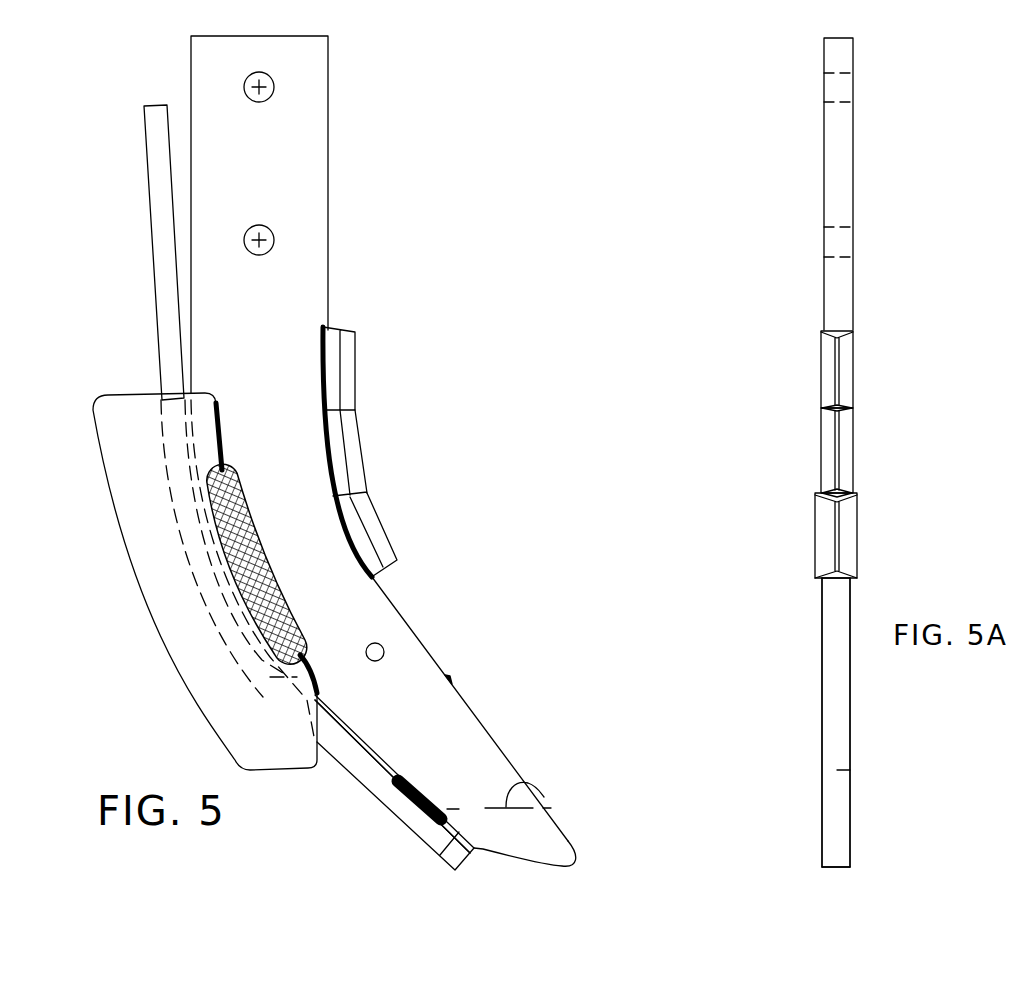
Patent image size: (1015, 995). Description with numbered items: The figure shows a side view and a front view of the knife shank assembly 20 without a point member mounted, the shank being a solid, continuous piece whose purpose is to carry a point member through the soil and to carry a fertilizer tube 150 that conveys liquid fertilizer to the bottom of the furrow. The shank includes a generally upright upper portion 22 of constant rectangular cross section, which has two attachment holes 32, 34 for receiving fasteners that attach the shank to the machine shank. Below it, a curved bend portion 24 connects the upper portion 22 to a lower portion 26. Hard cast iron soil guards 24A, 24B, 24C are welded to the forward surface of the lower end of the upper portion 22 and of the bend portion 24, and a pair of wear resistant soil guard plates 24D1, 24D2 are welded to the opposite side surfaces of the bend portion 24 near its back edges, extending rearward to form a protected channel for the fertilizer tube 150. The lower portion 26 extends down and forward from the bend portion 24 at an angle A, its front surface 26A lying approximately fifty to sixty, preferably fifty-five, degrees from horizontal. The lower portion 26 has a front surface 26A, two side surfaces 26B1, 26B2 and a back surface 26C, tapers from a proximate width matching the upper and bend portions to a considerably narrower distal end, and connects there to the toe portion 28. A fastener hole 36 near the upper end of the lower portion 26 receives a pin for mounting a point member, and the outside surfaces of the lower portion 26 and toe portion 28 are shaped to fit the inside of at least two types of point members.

In FIG. 5, the knife shank assembly 20 is at (338, 252).
In FIG. 5A, the knife shank assembly 20 is at (805, 310).
In FIG. 5, the upper portion 22 is at (240, 172).
In FIG. 5A, the upper portion 22 is at (824, 140).
In FIG. 5, the bend portion 24 is at (300, 520).
In FIG. 5A, the bend portion 24 is at (852, 483).
In FIG. 5, the soil guard 24A is at (352, 363).
In FIG. 5A, the soil guard 24A is at (847, 368).
In FIG. 5, the soil guard 24B is at (352, 433).
In FIG. 5A, the soil guard 24B is at (847, 443).
In FIG. 5, the soil guard 24C is at (378, 530).
In FIG. 5A, the soil guard 24C is at (848, 540).
In FIG. 5, the soil guard plate 24D1 is at (190, 657).
In FIG. 5, the soil guard plate 24D2 is at (204, 581).
In FIG. 5, the lower portion 26 is at (460, 740).
In FIG. 5A, the lower portion 26 is at (851, 686).
In FIG. 5, the front surface 26A is at (463, 692).
In FIG. 5A, the front surface 26A is at (837, 770).
In FIG. 5, the side surface 26B1 is at (473, 772).
In FIG. 5A, the side surface 26B1 is at (822, 725).
In FIG. 5A, the side surface 26B2 is at (851, 733).
In FIG. 5, the back surface 26C is at (363, 745).
In FIG. 5, the toe portion 28 is at (553, 847).
In FIG. 5A, the toe portion 28 is at (851, 852).
In FIG. 5, the attachment hole 32 is at (273, 95).
In FIG. 5A, the attachment hole 32 is at (847, 85).
In FIG. 5, the attachment hole 34 is at (273, 230).
In FIG. 5A, the attachment hole 34 is at (847, 240).
In FIG. 5, the fastener hole 36 is at (375, 643).
In FIG. 5, the fertilizer tube 150 is at (168, 302).
In FIG. 5, the angle A is at (548, 787).